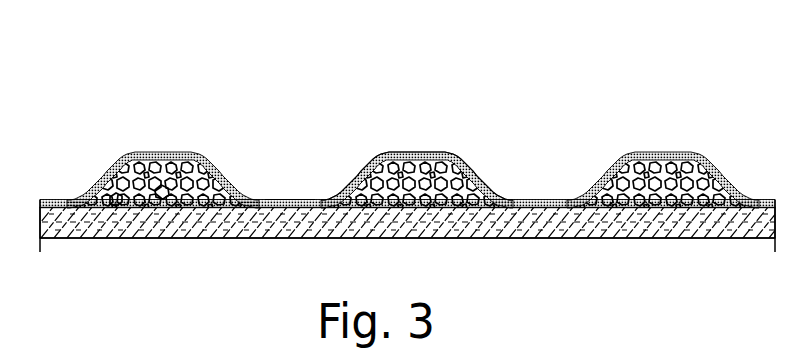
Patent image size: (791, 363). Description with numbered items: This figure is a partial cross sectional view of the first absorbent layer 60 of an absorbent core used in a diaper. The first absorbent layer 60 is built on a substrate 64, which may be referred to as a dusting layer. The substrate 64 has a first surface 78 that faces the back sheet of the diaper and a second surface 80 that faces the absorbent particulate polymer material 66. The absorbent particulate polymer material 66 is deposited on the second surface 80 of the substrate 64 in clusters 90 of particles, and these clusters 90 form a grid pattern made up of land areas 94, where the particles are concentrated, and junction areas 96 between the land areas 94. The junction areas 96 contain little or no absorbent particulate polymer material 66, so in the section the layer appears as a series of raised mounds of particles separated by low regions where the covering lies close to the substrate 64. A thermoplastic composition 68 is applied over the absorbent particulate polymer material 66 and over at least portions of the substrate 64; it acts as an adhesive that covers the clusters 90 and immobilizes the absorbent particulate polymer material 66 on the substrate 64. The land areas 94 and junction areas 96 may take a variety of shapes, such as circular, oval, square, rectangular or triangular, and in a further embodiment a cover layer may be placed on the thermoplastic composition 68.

The first absorbent layer 60 is at (403, 164).
The substrate 64 is at (613, 238).
The absorbent particulate polymer material 66 is at (123, 196).
The thermoplastic composition 68 is at (162, 193).
The first surface 78 is at (735, 238).
The second surface 80 is at (708, 154).
The clusters 90 is at (659, 163).
The land areas 94 is at (413, 153).
The junction areas 96 is at (288, 190).